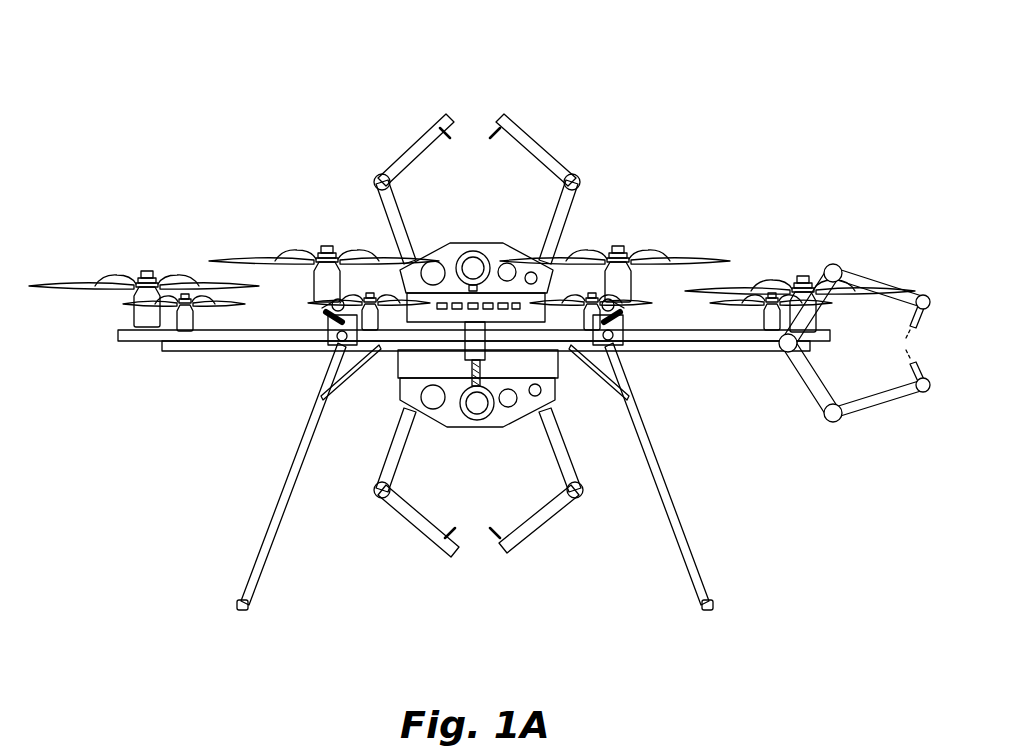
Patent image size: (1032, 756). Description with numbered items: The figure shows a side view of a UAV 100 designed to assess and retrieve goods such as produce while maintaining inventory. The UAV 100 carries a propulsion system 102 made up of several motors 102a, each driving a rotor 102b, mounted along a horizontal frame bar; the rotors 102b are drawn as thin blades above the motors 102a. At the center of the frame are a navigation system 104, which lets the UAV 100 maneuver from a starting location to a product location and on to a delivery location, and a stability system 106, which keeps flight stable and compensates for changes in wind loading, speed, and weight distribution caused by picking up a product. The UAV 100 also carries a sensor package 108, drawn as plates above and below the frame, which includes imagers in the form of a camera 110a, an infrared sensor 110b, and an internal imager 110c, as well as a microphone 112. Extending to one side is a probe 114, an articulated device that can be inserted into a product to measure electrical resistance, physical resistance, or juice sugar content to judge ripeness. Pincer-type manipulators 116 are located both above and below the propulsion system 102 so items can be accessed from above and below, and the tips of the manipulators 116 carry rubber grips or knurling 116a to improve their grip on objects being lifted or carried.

The UAV 100 is at (190, 55).
The propulsion system 102 is at (467, 296).
The motor 102a is at (130, 317).
The rotor 102b is at (108, 283).
The navigation system 104 is at (444, 308).
The stability system 106 is at (485, 312).
The sensor package 108 is at (455, 222).
The camera 110a is at (413, 258).
The infrared sensor 110b is at (473, 252).
The internal imager 110c is at (507, 262).
The microphone 112 is at (538, 278).
The probe 114 is at (835, 422).
The manipulator 116 is at (491, 337).
The knurling 116a is at (458, 124).